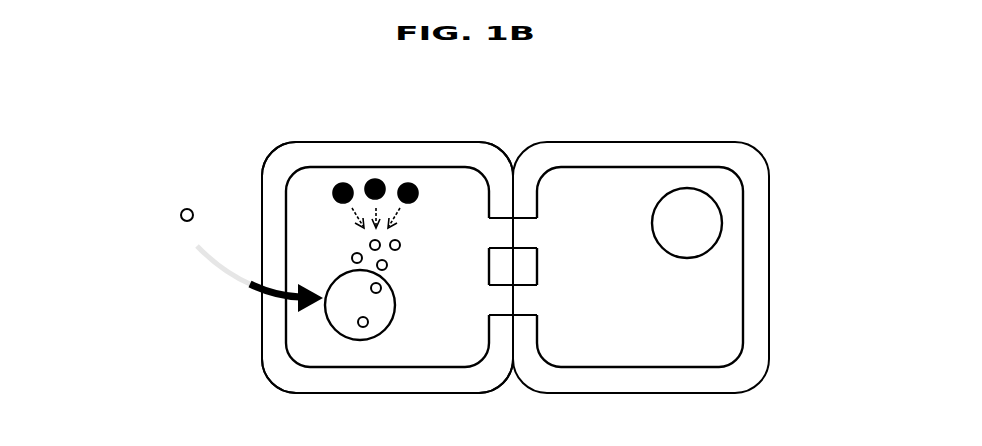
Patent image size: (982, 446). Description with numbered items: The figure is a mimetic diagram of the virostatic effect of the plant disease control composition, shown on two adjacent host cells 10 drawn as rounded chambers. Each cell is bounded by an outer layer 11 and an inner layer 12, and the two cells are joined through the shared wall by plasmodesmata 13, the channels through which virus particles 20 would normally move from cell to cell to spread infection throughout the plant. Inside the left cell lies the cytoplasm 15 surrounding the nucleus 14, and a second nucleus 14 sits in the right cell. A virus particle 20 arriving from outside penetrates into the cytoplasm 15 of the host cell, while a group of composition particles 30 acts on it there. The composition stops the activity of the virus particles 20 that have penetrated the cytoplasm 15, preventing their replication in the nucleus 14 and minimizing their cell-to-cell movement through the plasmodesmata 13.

The culture device 10 is at (753, 142).
The outer wall of first chamber 11 is at (319, 140).
The inner wall of first chamber 12 is at (407, 162).
The plasmodesmata 13 is at (503, 215).
The nucleus 14 is at (523, 264).
The cytoplasm 15 is at (584, 267).
The virus particles 20 is at (178, 228).
The particles 30 is at (420, 175).